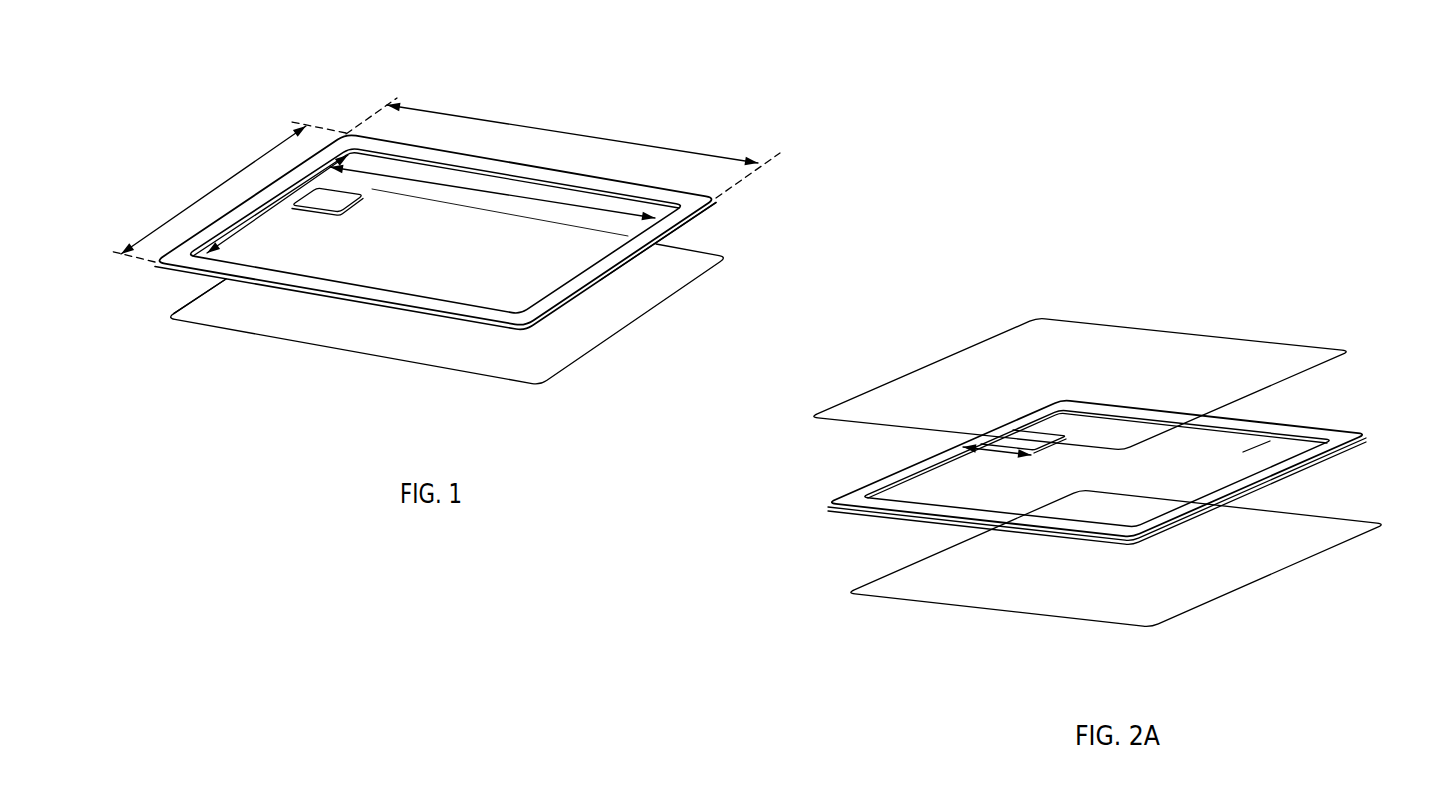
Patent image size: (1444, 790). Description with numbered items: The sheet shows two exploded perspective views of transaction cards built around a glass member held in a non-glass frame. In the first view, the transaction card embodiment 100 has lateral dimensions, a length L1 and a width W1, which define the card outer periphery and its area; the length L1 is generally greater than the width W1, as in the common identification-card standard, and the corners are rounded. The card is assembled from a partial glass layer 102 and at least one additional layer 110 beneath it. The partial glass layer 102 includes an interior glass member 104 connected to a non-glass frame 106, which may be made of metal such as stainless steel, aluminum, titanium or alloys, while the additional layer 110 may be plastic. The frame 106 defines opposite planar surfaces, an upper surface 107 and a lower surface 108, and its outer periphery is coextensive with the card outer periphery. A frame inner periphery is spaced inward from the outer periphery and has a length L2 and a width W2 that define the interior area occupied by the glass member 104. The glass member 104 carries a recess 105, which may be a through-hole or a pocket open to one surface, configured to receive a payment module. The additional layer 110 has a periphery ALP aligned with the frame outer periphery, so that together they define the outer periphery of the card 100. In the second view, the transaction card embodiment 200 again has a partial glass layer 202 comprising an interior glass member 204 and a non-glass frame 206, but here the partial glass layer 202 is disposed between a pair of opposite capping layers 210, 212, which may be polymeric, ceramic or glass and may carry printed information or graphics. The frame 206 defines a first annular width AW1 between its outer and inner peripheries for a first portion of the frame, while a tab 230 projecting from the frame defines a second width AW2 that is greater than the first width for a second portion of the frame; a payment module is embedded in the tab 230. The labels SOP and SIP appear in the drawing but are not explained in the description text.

In FIG. 1, the transaction card embodiment 100 is at (560, 260).
In FIG. 1, the partial glass layer 102 is at (720, 206).
In FIG. 1, the interior glass member 104 is at (182, 257).
In FIG. 1, the recess 105 is at (313, 204).
In FIG. 1, the non-glass frame 106 is at (158, 265).
In FIG. 1, the upper surface 107 is at (687, 192).
In FIG. 1, the lower surface 108 is at (693, 221).
In FIG. 1, the additional layer 110 is at (212, 320).
In FIG. 1, the second outer perimeter SOP is at (441, 148).
In FIG. 1, the second inner perimeter SIP is at (428, 166).
In FIG. 1, the additional layer periphery ALP is at (693, 284).
In FIG. 1, the width W1 is at (215, 188).
In FIG. 1, the width of the frame inner periphery W2 is at (275, 206).
In FIG. 1, the length L1 is at (533, 127).
In FIG. 1, the length of the frame inner periphery L2 is at (543, 200).
In FIG. 2A, the transaction card embodiment 200 is at (1190, 397).
In FIG. 2A, the partial glass layer 202 is at (820, 500).
In FIG. 2A, the interior glass member 204 is at (970, 493).
In FIG. 2A, the non-glass frame 206 is at (837, 511).
In FIG. 2A, the capping layer 210 is at (872, 586).
In FIG. 2A, the capping layer 212 is at (836, 414).
In FIG. 2A, the tab 230 is at (1003, 466).
In FIG. 2A, the first annular width AW1 is at (1312, 424).
In FIG. 2A, the second width AW2 is at (997, 443).